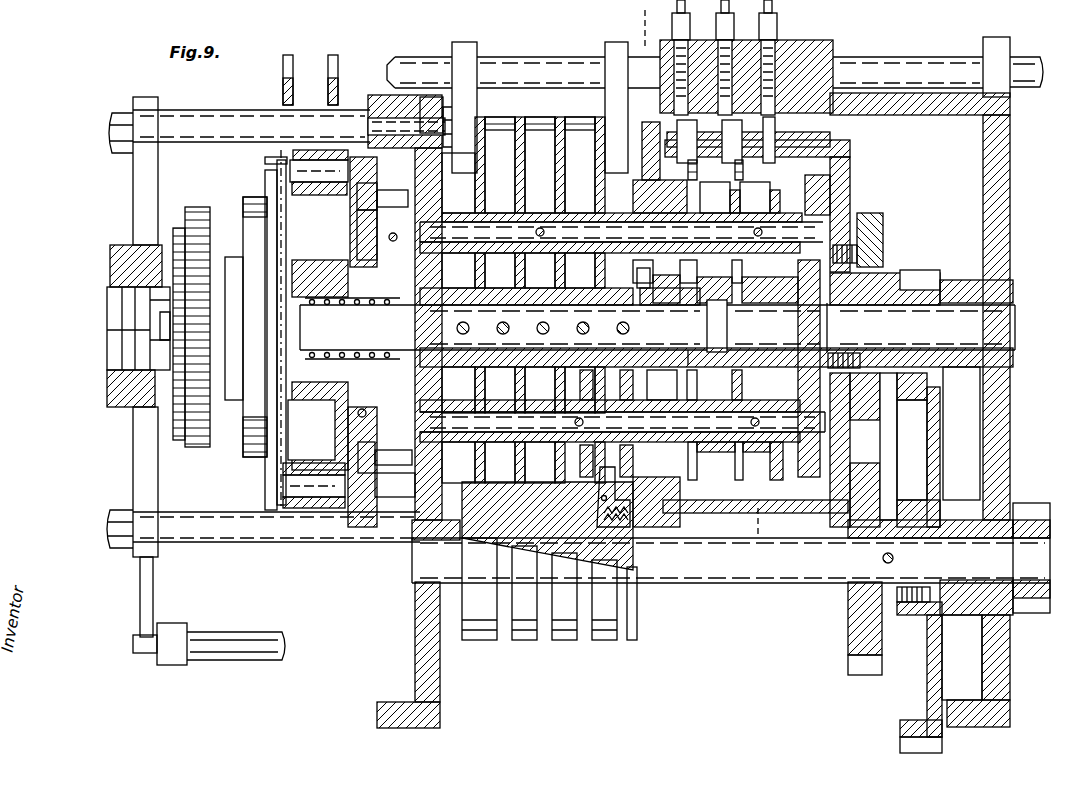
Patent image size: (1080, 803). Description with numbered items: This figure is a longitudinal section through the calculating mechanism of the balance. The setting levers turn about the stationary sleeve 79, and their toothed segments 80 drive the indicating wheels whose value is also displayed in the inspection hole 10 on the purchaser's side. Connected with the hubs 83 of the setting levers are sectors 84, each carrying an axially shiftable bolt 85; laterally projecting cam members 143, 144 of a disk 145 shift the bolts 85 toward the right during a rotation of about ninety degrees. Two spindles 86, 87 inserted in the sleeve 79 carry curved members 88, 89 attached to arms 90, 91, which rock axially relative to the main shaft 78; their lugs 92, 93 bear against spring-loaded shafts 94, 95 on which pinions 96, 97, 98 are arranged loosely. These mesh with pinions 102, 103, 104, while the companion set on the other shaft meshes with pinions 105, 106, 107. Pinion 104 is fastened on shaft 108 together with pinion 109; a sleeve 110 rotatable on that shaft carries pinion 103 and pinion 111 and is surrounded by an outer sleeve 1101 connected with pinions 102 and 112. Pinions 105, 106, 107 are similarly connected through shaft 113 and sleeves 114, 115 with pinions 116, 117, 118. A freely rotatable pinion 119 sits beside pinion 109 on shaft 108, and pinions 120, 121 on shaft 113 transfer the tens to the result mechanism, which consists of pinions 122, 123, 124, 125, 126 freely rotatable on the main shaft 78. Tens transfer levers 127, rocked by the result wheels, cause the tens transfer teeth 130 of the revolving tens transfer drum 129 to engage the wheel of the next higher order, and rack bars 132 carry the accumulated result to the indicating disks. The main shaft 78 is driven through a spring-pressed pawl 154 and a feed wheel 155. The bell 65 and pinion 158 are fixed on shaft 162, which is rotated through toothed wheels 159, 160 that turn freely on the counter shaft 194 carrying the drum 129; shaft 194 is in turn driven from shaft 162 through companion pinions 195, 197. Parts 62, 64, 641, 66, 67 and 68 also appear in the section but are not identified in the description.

The inspection hole 10 is at (689, 272).
The shaft 62 is at (815, 75).
The housing block with screws 64 is at (775, 58).
The housing plate 641 is at (790, 70).
The bell 65 is at (850, 150).
The bar 66 is at (795, 138).
The post 67 is at (772, 150).
The pin 68 is at (743, 165).
The main shaft 78 is at (330, 390).
The stationary sleeve 79 is at (325, 395).
The toothed segment 80 is at (332, 64).
The hub 83 is at (328, 272).
The sector 84 is at (310, 186).
The bolt 85 is at (322, 160).
The spindle 86 is at (366, 413).
The spindle 87 is at (393, 233).
The curved member 88 is at (358, 157).
The curved member 89 is at (358, 527).
The arm 90 is at (358, 230).
The arm 91 is at (393, 497).
The lug 92 is at (362, 202).
The lug 93 is at (362, 452).
The shaft 94 is at (392, 192).
The shaft 95 is at (395, 465).
The pinion 96 is at (698, 170).
The pinion 97 is at (715, 197).
The pinion 98 is at (755, 197).
The pinion 102 is at (656, 271).
The pinion 103 is at (697, 272).
The pinion 104 is at (742, 272).
The pinion 105 is at (693, 470).
The pinion 106 is at (739, 470).
The pinion 107 is at (778, 470).
The shaft 108 is at (820, 232).
The pinion 109 is at (500, 165).
The sleeve 110 is at (655, 215).
The sleeve 1101 is at (632, 210).
The pinion 111 is at (541, 165).
The pinion 112 is at (581, 165).
The shaft 113 is at (768, 425).
The sleeve 114 is at (705, 405).
The sleeve 115 is at (661, 385).
The pinion 116 is at (580, 380).
The pinion 117 is at (620, 393).
The pinion 118 is at (688, 350).
The pinion 119 is at (458, 183).
The pinion 120 is at (540, 461).
The pinion 121 is at (476, 455).
The pinion 122 is at (638, 298).
The pinion 123 is at (581, 270).
The pinion 124 is at (717, 327).
The pinion 125 is at (500, 270).
The pinion 126 is at (458, 270).
The tens transfer lever 127 is at (580, 470).
The tens transfer drum 129 is at (485, 625).
The tens transfer tooth 130 is at (632, 505).
The rack bar 132 is at (483, 120).
The cam member 143 is at (268, 162).
The cam member 144 is at (280, 486).
The disk 145 is at (265, 472).
The spring-pressed pawl 154 is at (160, 314).
The feed wheel 155 is at (155, 357).
The pinion 158 is at (925, 272).
The toothed wheel 159 is at (940, 440).
The toothed wheel 160 is at (1030, 503).
The shaft 162 is at (1017, 324).
The counter shaft 194 is at (717, 575).
The companion pinion 195 is at (870, 413).
The companion pinion 197 is at (858, 625).